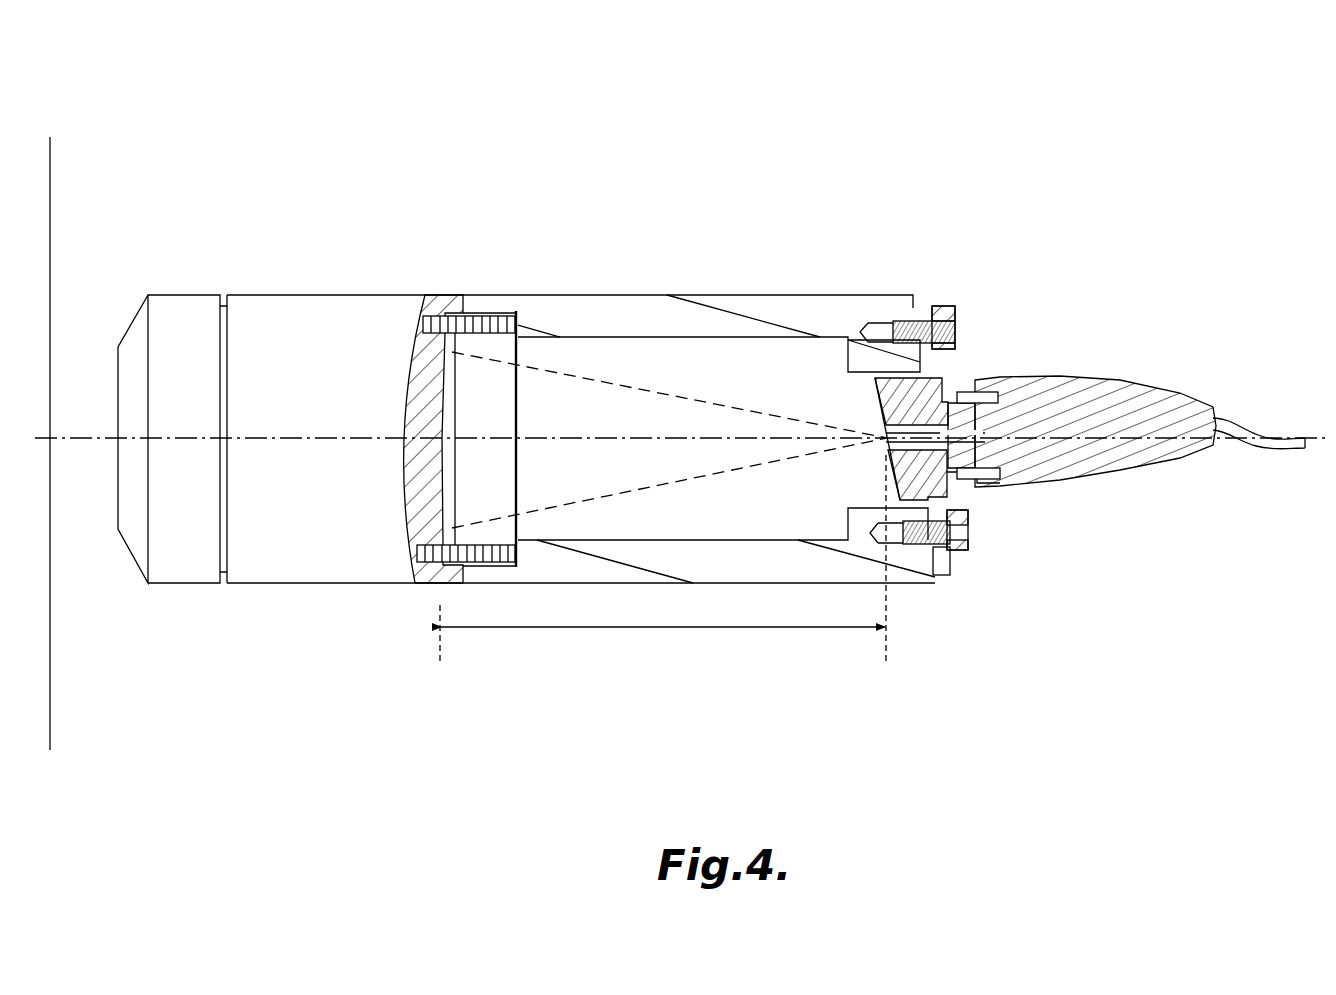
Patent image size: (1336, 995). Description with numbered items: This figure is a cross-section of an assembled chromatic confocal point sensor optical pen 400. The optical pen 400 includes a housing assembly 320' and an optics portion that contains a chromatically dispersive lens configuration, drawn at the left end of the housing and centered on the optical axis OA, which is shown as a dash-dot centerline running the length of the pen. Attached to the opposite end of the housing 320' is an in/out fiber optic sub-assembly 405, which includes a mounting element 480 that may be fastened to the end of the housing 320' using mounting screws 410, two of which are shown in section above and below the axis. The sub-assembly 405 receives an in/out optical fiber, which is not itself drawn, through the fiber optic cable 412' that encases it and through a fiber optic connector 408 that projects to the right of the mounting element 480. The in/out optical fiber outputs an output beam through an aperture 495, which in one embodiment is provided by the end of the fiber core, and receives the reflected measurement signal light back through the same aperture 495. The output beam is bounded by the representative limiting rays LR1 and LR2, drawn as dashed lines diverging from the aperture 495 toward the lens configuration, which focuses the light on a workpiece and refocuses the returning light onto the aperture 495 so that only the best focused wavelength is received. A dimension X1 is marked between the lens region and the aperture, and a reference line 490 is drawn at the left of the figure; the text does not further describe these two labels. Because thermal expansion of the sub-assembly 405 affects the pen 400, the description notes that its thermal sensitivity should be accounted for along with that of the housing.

The chromatic confocal point sensor optical pen 400 is at (1200, 122).
The in/out fiber optic sub-assembly 405 is at (1255, 192).
The fiber optic connector 408 is at (1093, 380).
The mounting screws 410 is at (942, 305).
The fiber optic cable 412' is at (1259, 405).
The mounting element 480 is at (925, 308).
The reference plane 490 is at (50, 172).
The aperture 495 is at (884, 437).
The housing assembly 320' is at (581, 398).
The limiting ray LR1 is at (610, 383).
The limiting ray LR2 is at (638, 487).
The optical axis OA is at (85, 441).
The distance X1 is at (630, 628).